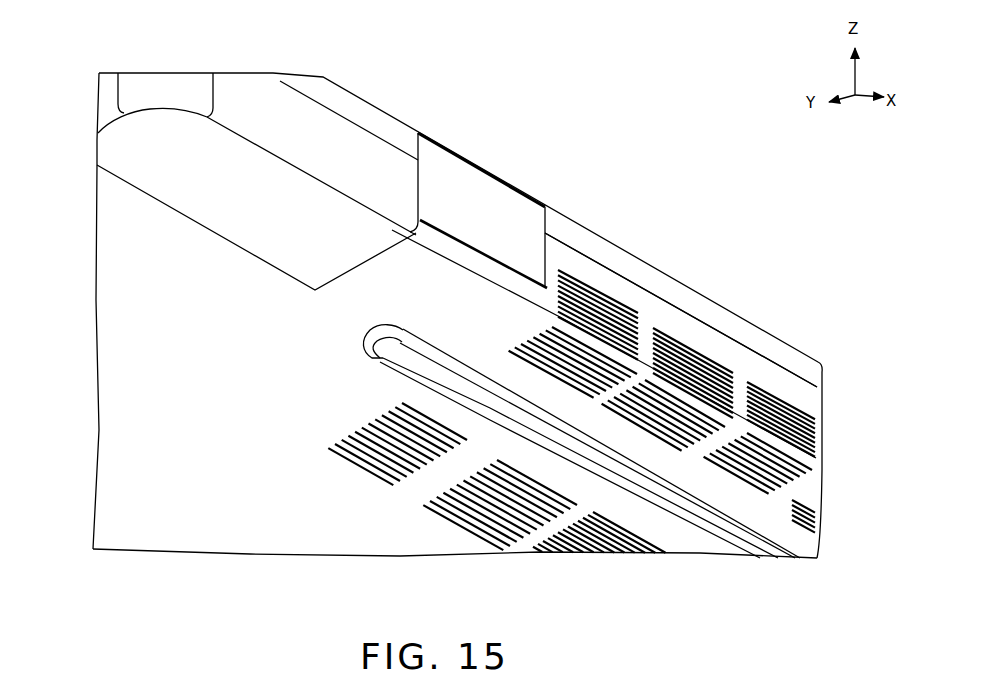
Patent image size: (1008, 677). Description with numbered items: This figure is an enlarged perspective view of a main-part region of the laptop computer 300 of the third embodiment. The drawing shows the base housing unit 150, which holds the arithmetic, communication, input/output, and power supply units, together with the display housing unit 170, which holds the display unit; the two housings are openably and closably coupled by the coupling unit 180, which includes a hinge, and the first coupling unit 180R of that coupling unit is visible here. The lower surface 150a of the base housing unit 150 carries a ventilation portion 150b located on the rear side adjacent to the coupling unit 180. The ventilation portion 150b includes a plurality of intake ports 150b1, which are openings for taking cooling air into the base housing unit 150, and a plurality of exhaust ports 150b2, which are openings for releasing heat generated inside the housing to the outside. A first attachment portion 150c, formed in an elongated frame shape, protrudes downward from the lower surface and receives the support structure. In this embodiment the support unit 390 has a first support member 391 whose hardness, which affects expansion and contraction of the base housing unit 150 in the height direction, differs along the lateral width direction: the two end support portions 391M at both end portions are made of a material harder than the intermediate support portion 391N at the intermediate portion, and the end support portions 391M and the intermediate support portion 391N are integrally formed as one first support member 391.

The base housing unit 150 is at (667, 322).
The lower surface 150a is at (206, 413).
The ventilation portion 150b is at (424, 319).
The intake ports 150b1 is at (380, 417).
The exhaust ports 150b2 is at (528, 352).
The first attachment portion 150c is at (697, 505).
The display housing unit 170 is at (647, 272).
The coupling unit 180 is at (474, 149).
The first coupling unit 180R is at (503, 207).
The laptop computer 300 is at (658, 98).
The support unit 390 is at (474, 433).
The first support member 391 is at (527, 432).
The end support portions 391M is at (560, 458).
The intermediate support portion 391N is at (610, 482).